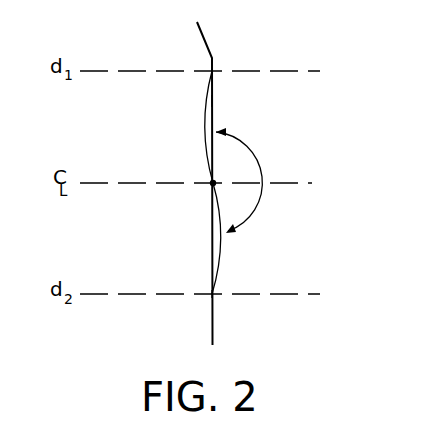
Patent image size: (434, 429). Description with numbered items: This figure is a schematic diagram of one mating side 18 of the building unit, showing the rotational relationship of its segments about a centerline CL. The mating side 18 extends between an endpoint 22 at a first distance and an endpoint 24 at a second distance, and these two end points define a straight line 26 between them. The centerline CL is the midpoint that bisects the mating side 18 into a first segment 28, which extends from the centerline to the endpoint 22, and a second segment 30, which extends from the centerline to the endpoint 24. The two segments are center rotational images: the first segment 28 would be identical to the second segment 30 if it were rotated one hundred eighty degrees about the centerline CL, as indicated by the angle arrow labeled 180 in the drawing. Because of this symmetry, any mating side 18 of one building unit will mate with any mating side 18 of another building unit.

The mating side 18 is at (210, 148).
The endpoint 22 is at (212, 68).
The endpoint 24 is at (212, 294).
The line 26 is at (213, 101).
The first segment 28 is at (205, 120).
The second segment 30 is at (221, 252).
The 180 degree angle indicator 180 is at (253, 148).